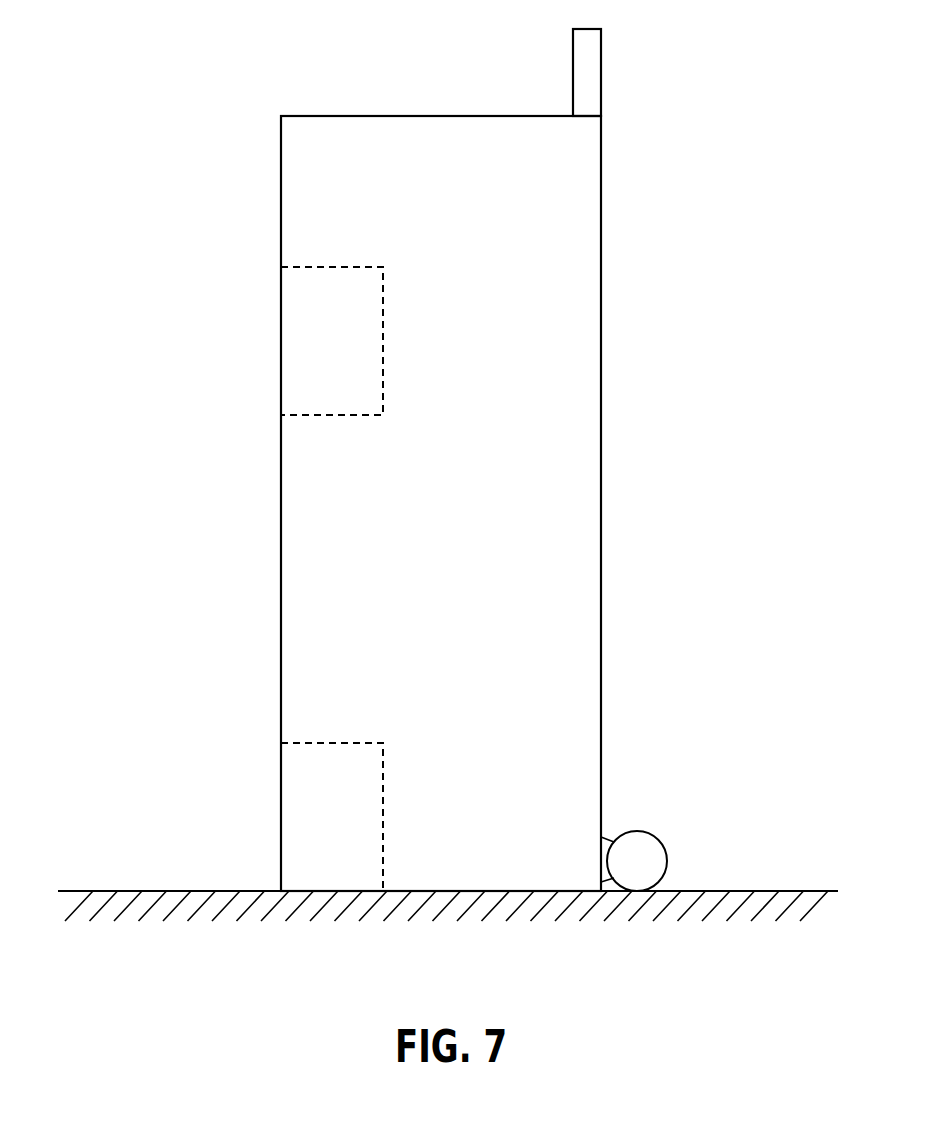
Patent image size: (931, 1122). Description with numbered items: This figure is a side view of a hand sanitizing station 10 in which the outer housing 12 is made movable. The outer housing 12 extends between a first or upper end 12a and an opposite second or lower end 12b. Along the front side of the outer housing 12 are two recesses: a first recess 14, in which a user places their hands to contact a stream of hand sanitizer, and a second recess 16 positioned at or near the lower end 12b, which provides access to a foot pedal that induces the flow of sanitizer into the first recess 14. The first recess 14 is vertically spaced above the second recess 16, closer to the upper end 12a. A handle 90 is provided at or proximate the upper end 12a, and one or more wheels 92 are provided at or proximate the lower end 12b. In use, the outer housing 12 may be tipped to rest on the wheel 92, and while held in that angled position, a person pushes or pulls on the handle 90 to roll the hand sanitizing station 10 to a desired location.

The hand sanitizing station 10 is at (248, 85).
The outer housing 12 is at (601, 362).
The upper end 12a is at (432, 115).
The lower end 12b is at (450, 889).
The first recess 14 is at (384, 320).
The second recess 16 is at (384, 790).
The handle 90 is at (601, 65).
The wheel 92 is at (668, 848).